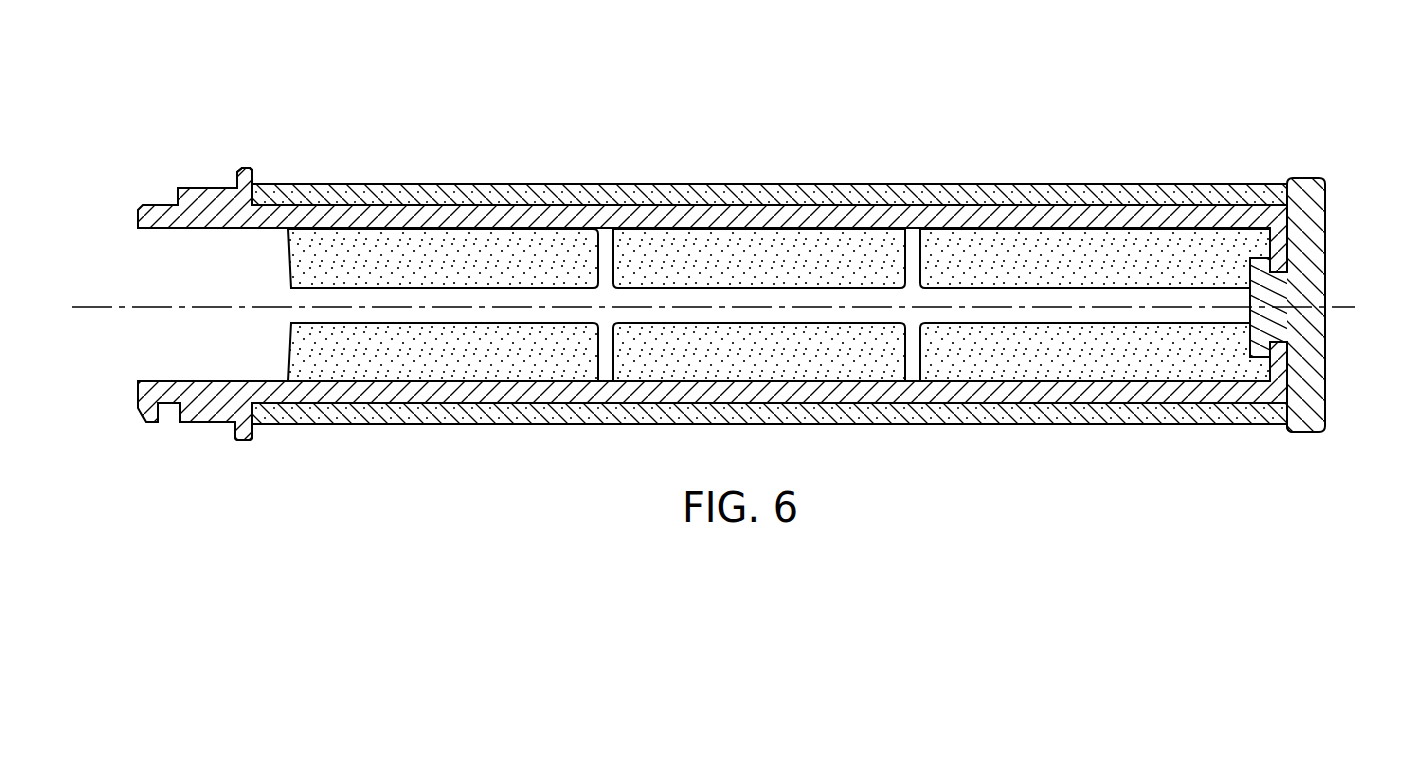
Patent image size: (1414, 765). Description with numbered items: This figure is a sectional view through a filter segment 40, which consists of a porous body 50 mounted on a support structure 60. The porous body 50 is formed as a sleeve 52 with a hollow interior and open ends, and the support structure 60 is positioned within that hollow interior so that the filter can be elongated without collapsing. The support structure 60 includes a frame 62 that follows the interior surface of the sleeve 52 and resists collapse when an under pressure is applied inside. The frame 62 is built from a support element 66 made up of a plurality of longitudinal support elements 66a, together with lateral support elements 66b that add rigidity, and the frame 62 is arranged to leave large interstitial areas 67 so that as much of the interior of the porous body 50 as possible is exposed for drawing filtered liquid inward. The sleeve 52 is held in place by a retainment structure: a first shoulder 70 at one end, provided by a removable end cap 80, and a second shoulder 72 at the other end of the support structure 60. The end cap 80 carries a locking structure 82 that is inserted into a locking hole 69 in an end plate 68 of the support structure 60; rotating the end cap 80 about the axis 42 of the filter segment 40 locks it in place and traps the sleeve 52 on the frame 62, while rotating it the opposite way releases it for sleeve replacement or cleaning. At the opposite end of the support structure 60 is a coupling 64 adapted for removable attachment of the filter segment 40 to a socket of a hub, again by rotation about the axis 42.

The filter segment 40 is at (725, 120).
The axis 42 is at (92, 306).
The porous body 50 is at (941, 152).
The sleeve 52 is at (736, 184).
The support structure 60 is at (481, 240).
The frame 62 is at (386, 204).
The coupling 64 is at (192, 186).
The support element 66 is at (1118, 276).
The longitudinal support elements 66a is at (655, 248).
The lateral support elements 66b is at (921, 252).
The interstitial areas 67 is at (1181, 264).
The end plate 68 is at (1290, 247).
The locking hole 69 is at (1290, 336).
The first shoulder 70 is at (1290, 425).
The second shoulder 72 is at (253, 436).
The removable end cap 80 is at (1343, 196).
The locking structure 82 is at (1247, 336).